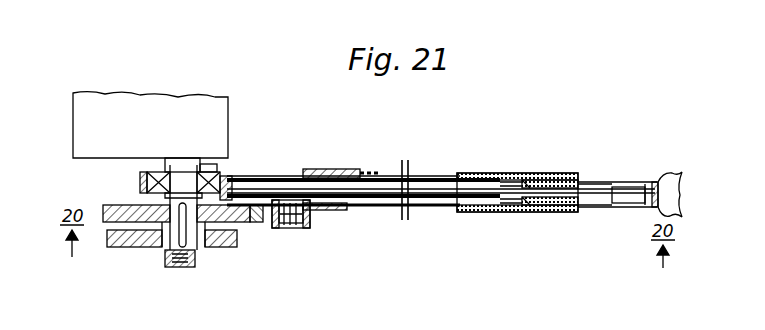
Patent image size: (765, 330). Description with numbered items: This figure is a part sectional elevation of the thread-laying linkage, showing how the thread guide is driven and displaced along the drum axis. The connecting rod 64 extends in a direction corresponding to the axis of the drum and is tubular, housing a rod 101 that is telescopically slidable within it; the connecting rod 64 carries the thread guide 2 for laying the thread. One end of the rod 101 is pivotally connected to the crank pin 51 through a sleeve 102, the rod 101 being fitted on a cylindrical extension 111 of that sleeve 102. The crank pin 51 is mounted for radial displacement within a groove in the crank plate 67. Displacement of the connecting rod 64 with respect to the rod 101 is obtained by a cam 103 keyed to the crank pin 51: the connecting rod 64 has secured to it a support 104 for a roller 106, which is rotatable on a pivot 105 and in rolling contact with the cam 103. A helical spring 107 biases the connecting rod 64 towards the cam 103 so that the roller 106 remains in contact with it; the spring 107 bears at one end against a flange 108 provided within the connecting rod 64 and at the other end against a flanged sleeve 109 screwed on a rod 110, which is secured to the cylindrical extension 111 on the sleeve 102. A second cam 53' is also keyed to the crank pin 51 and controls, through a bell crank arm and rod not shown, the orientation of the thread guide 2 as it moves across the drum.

The thread guide 2 is at (667, 177).
The crank pin 51 is at (167, 243).
The cam 53' is at (177, 247).
The connecting rod 64 is at (428, 207).
The crank plate 67 is at (110, 143).
The rod 101 is at (378, 173).
The sleeve 102 is at (213, 160).
The cam 103 is at (257, 223).
The support 104 is at (310, 217).
The pivot 105 is at (283, 228).
The roller 106 is at (264, 190).
The helical spring 107 is at (593, 183).
The flange 108 is at (523, 177).
The flanged sleeve 109 is at (608, 208).
The rod 110 is at (447, 196).
The cylindrical extension 111 is at (230, 173).